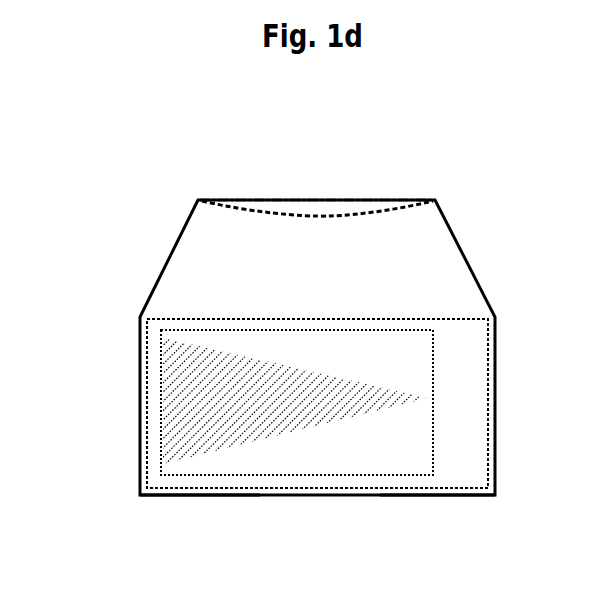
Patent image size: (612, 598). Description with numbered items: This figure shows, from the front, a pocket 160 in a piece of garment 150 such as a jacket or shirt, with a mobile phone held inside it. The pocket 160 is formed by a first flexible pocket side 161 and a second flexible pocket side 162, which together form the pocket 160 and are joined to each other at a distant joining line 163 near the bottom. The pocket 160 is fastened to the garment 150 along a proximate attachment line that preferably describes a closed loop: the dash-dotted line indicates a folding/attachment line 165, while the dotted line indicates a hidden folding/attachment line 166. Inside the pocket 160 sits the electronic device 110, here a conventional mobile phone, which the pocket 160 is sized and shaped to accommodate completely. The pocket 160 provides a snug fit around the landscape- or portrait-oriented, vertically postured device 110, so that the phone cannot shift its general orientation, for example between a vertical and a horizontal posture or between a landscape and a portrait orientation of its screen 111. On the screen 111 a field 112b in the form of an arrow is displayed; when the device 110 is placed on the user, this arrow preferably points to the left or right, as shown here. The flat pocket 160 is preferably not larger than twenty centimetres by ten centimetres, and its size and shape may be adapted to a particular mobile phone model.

The garment 150 is at (314, 339).
The electronic device 110 is at (146, 362).
The screen 111 is at (433, 447).
The field 112b is at (233, 448).
The pocket 160 is at (140, 447).
The first flexible pocket side 161 is at (471, 371).
The second flexible pocket side 162 is at (412, 500).
The distant joining line 163 is at (200, 497).
The folding/attachment line 165 is at (352, 198).
The hidden folding/attachment line 166 is at (307, 215).